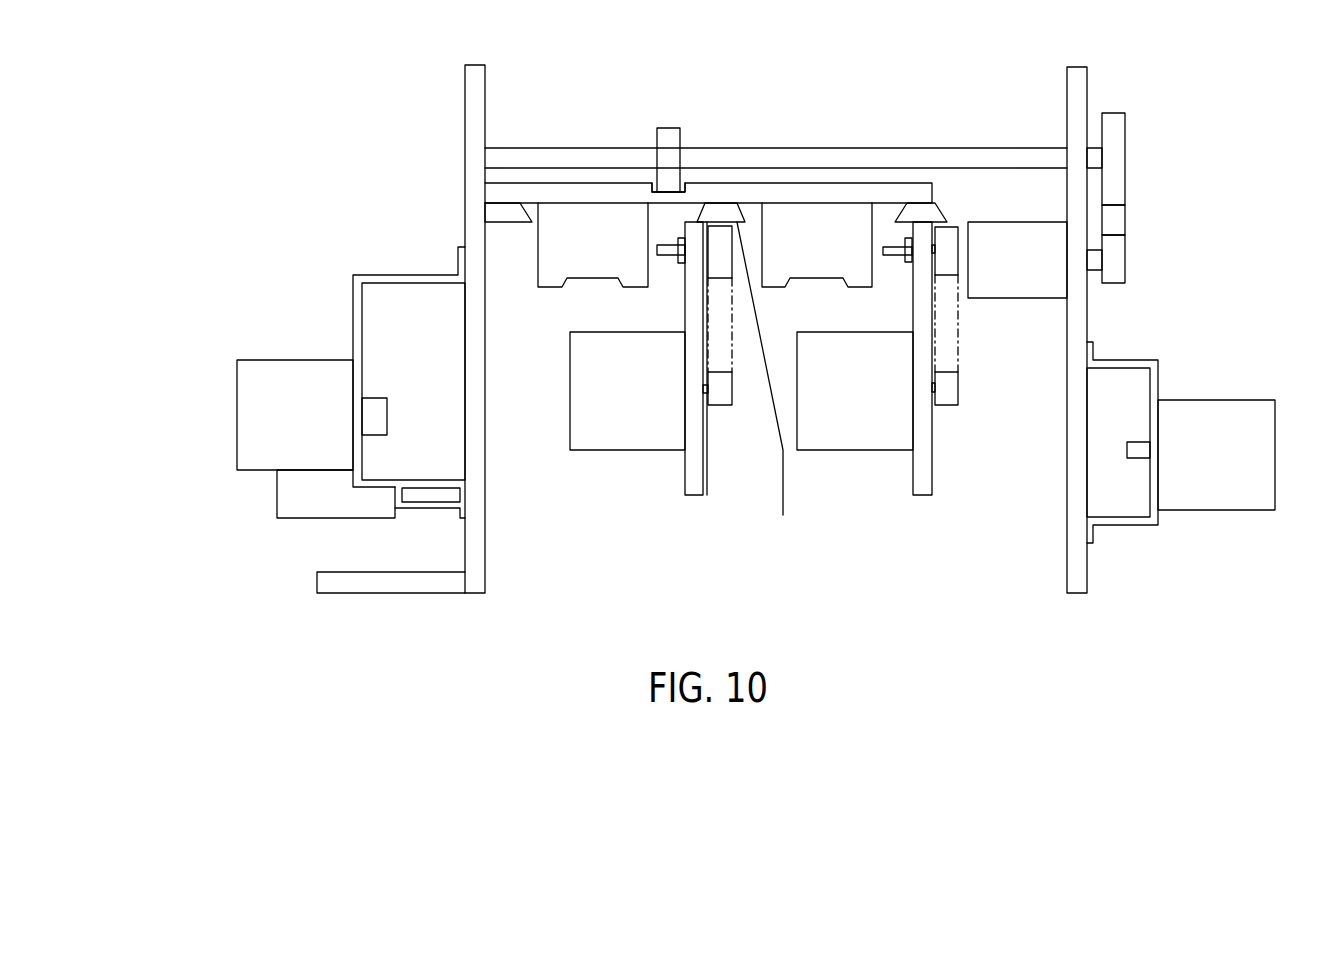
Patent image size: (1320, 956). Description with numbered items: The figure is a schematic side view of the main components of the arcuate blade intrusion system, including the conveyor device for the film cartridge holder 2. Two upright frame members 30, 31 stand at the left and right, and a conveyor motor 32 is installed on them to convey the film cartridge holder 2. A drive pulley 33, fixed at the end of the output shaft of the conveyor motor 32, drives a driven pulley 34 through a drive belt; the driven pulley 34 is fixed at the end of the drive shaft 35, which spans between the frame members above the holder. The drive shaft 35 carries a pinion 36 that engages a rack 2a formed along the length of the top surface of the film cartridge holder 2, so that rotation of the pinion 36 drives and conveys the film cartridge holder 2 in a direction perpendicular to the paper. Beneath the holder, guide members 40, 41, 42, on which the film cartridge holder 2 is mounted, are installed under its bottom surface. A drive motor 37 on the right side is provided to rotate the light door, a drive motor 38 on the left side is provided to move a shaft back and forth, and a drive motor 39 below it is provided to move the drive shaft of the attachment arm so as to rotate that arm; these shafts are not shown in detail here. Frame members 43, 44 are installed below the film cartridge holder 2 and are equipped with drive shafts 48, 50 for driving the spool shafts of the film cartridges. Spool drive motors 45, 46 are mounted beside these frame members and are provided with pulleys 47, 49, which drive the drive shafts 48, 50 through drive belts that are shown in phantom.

The film cartridge holder 2 is at (836, 205).
The rack 2a is at (658, 185).
The frame member 30 is at (478, 564).
The frame member 31 is at (1077, 560).
The conveyor motor 32 is at (1020, 277).
The drive pulley 33 is at (1115, 262).
The driven pulley 34 is at (1115, 158).
The drive shaft 35 is at (775, 157).
The pinion 36 is at (673, 130).
The drive motor 37 is at (1210, 413).
The drive motor 38 is at (300, 358).
The drive motor 39 is at (277, 505).
The guide member 40 is at (497, 213).
The guide member 41 is at (783, 515).
The guide member 42 is at (938, 213).
The frame member 43 is at (692, 477).
The frame member 44 is at (925, 465).
The spool drive motor 45 is at (630, 430).
The spool drive motor 46 is at (868, 430).
The pulley 47 is at (722, 395).
The drive shaft 48 is at (668, 257).
The pulley 49 is at (947, 392).
The drive shaft 50 is at (897, 257).